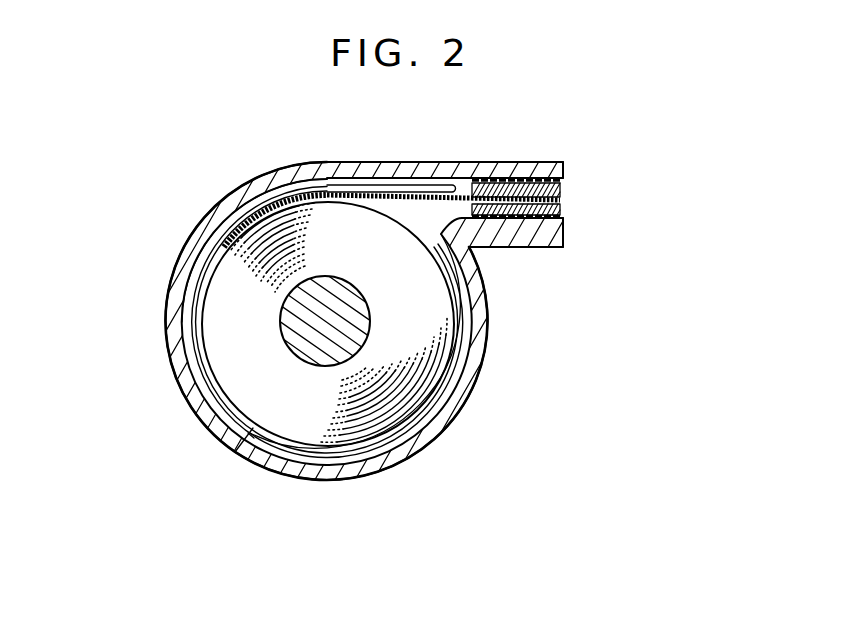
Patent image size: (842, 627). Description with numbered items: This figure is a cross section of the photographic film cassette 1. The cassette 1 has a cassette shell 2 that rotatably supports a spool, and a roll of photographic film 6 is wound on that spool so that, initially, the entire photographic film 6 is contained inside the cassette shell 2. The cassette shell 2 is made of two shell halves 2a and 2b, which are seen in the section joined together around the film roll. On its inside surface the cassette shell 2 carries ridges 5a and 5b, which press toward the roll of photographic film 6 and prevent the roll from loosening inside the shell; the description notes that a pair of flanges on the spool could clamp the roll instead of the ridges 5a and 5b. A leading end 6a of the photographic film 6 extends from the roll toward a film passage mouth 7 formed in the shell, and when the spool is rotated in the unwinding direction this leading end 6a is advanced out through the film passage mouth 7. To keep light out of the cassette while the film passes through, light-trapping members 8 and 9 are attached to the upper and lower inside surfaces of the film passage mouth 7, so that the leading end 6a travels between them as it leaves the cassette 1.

The photographic film cassette 1 is at (500, 377).
The cassette shell 2 is at (308, 392).
The shell half 2a is at (205, 432).
The shell half 2b is at (265, 453).
The ridge 5a is at (186, 352).
The ridge 5b is at (418, 433).
The photographic film 6 is at (266, 214).
The leading end 6a is at (563, 203).
The film passage mouth 7 is at (578, 173).
The light-trapping member 8 is at (562, 185).
The light-trapping member 9 is at (518, 244).